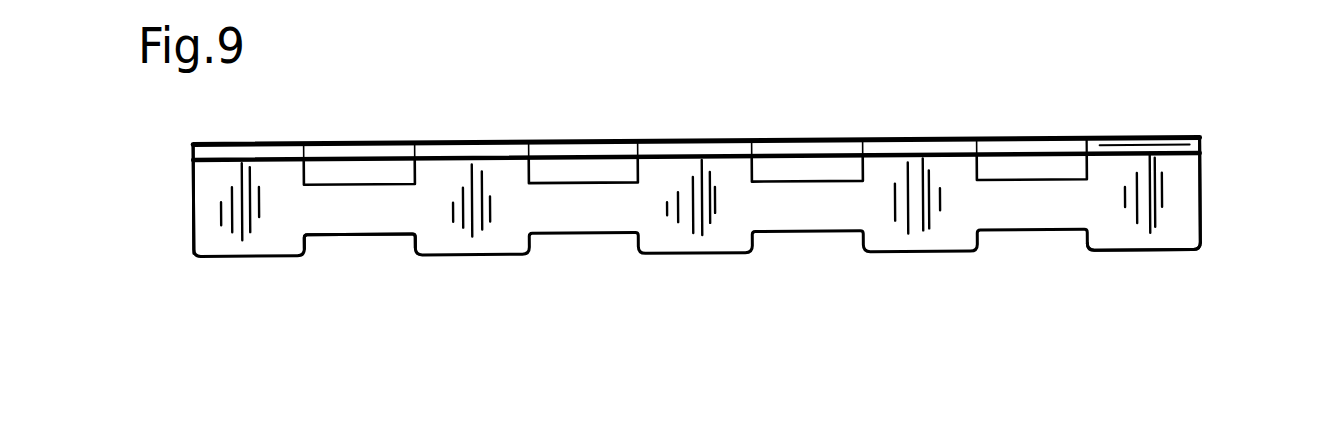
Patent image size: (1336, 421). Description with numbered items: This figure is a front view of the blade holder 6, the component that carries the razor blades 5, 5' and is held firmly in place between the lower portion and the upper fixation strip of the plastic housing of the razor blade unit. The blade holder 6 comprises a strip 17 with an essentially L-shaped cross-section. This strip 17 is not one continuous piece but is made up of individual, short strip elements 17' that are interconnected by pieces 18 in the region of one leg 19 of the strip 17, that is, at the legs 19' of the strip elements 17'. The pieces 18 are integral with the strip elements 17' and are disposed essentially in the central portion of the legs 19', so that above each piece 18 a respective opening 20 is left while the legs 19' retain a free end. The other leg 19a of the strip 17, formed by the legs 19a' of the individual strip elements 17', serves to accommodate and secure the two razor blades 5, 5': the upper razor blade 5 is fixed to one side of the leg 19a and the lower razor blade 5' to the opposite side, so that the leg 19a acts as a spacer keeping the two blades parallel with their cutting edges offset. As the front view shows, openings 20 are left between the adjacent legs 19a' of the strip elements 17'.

The upper razor blade 5 is at (696, 103).
The lower razor blade 5' is at (696, 111).
The blade holder 6 is at (710, 179).
The strip 17 is at (161, 199).
The strip elements 17' is at (356, 241).
The pieces 18 is at (355, 219).
The leg 19 is at (1203, 190).
The other leg 19a is at (1189, 130).
The legs of strip elements 19a' is at (1147, 109).
The leg of strip elements 19' is at (1144, 278).
The openings 20 is at (382, 175).